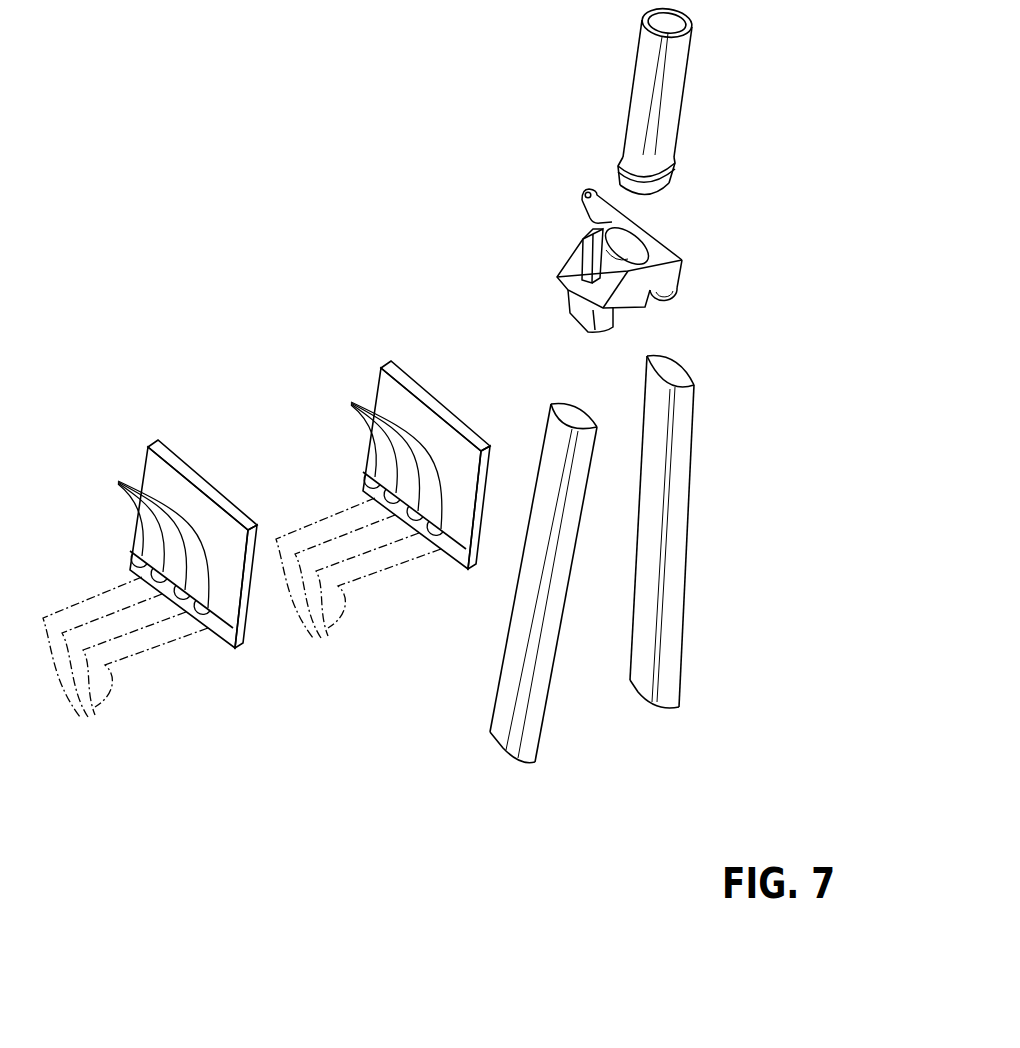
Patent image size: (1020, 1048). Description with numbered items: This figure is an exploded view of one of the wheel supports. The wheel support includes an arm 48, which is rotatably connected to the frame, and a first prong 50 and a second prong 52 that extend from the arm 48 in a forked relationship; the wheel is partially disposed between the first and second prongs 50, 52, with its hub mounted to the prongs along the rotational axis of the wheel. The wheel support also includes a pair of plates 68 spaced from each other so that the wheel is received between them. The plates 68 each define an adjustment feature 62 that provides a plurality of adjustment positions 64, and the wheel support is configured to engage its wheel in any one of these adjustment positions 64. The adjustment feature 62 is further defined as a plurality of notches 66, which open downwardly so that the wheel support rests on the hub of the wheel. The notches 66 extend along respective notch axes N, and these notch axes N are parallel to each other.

The arm 48 is at (670, 98).
The first prong 50 is at (537, 703).
The second prong 52 is at (668, 606).
The adjustment feature 62 is at (215, 674).
The adjustment positions 64 is at (139, 589).
The notches 66 is at (267, 498).
The plates 68 is at (150, 463).
The notch axes N is at (242, 618).